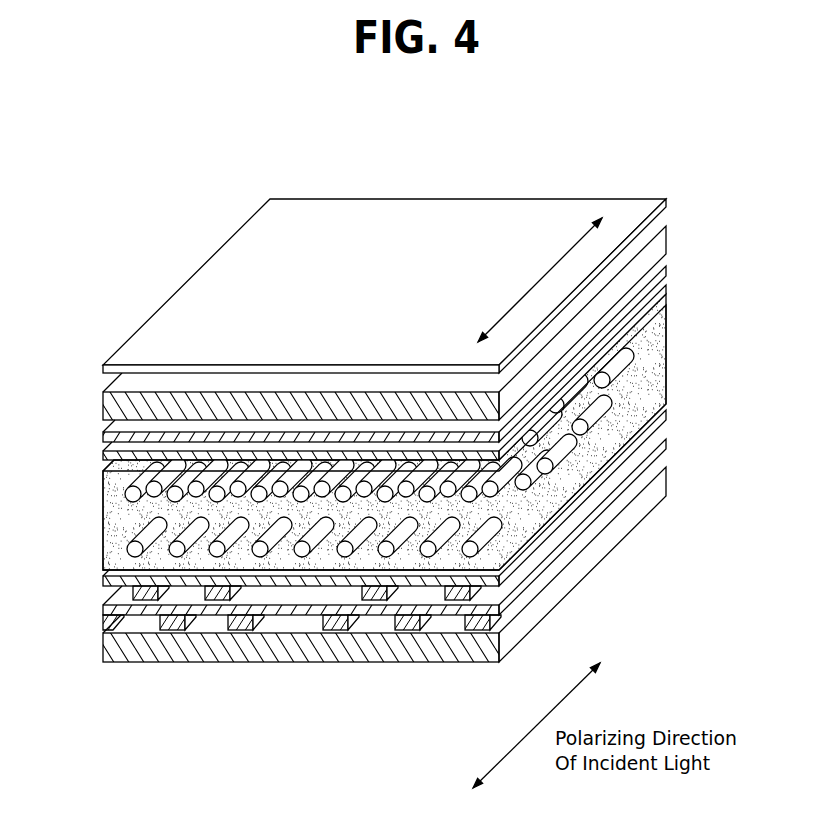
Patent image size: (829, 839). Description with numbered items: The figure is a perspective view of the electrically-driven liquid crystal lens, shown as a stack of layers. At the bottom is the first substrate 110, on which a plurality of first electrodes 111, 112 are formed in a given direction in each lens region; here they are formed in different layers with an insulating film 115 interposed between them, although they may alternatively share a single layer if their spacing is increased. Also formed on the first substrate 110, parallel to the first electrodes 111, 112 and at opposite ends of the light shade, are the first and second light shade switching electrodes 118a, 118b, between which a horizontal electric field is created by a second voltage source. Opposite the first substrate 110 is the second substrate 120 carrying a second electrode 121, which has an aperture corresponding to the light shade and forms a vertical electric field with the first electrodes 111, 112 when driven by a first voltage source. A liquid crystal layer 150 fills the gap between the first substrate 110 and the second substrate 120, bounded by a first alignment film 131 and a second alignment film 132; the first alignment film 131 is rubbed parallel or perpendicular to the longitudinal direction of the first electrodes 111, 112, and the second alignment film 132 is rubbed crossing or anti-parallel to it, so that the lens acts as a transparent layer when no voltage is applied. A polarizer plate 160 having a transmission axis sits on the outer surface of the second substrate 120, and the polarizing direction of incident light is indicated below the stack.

The first substrate 110 is at (666, 485).
The first electrode 111 is at (173, 620).
The first electrode 112 is at (143, 594).
The insulating film 115 is at (666, 446).
The first light shade switching electrode 118a is at (338, 625).
The second light shade switching electrode 118b is at (237, 623).
The second substrate 120 is at (666, 241).
The second electrode 121 is at (666, 270).
The first alignment film 131 is at (666, 415).
The second alignment film 132 is at (666, 294).
The liquid crystal layer 150 is at (666, 350).
The polarizer plate 160 is at (666, 203).